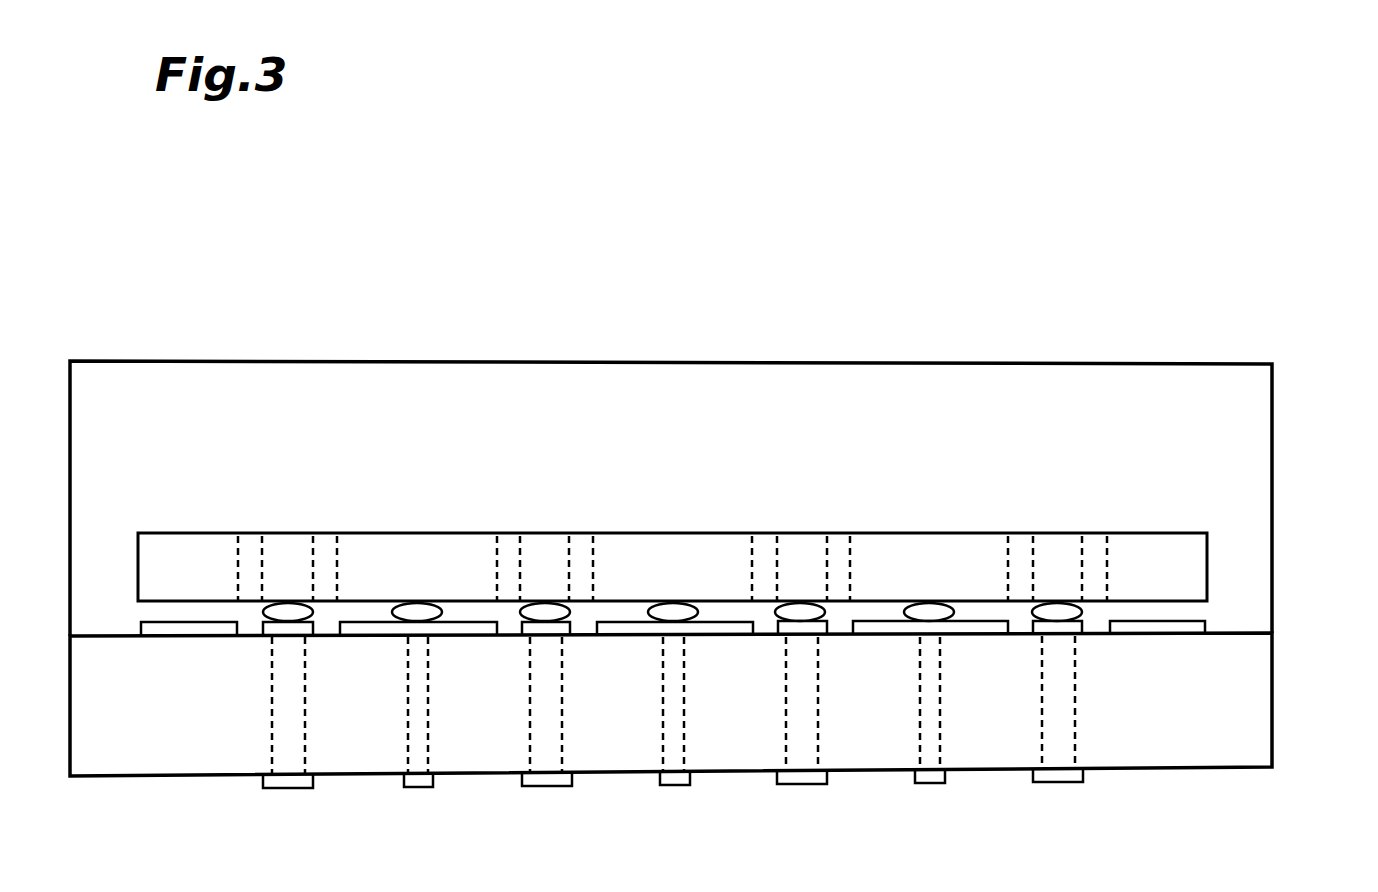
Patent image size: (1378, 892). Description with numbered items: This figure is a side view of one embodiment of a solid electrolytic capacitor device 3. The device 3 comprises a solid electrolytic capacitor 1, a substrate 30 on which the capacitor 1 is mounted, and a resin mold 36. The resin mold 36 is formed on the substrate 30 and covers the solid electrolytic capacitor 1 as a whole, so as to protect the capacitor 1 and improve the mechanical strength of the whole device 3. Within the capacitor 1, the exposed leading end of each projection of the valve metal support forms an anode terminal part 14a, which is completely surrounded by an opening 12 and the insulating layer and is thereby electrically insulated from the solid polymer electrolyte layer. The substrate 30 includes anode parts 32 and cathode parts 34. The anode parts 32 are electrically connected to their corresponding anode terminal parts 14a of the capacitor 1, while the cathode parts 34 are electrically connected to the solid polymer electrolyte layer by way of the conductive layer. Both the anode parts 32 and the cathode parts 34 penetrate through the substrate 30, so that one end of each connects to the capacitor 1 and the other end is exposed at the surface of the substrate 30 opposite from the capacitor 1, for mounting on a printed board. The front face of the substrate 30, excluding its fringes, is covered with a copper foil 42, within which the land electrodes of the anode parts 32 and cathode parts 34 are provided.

The solid electrolytic capacitor device 3 is at (1160, 207).
The resin mold 36 is at (1250, 416).
The substrate 30 is at (1253, 696).
The solid electrolytic capacitor 1 is at (1140, 515).
The opening 12 is at (752, 560).
The anode terminal part 14a is at (802, 548).
The copper foil 42 is at (707, 626).
The cathode parts 34 is at (940, 720).
The anode parts 32 is at (1075, 720).